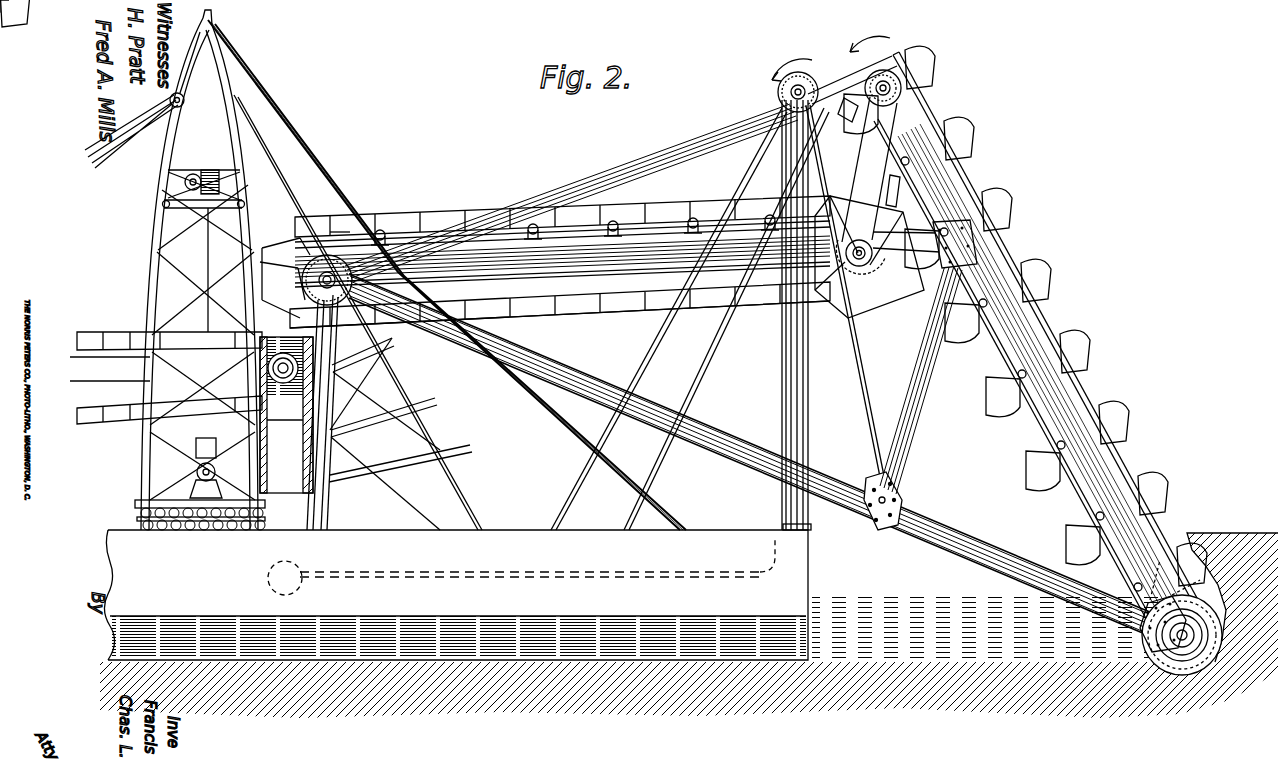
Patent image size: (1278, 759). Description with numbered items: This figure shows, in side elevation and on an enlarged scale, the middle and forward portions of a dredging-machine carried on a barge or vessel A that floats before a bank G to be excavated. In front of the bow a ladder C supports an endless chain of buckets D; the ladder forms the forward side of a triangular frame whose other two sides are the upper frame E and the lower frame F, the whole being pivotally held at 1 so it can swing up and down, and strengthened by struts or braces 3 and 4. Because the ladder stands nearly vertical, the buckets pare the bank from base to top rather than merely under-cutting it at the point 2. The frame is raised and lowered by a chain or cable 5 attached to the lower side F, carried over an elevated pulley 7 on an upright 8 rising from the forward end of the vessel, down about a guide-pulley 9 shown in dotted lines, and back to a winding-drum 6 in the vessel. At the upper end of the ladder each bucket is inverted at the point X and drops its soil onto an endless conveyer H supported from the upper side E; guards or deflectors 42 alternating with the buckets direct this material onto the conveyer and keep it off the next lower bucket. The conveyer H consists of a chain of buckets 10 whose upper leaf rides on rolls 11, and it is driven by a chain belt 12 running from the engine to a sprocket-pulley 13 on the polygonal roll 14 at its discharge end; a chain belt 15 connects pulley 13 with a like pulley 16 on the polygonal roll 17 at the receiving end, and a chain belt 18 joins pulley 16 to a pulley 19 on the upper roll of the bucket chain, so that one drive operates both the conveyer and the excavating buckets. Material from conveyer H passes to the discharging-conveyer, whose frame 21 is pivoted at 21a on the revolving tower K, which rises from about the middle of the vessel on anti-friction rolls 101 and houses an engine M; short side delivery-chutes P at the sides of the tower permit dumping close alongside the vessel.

The pivot 1 is at (292, 250).
The under-cut point 2 is at (1228, 648).
The strut or brace 3 is at (921, 378).
The strut or brace 4 is at (680, 158).
The chain or cable 5 is at (862, 368).
The winding-drum 6 is at (270, 579).
The elevated pulley 7 is at (806, 78).
The upright 8 is at (802, 315).
The guide-pulley 9 is at (770, 556).
The buckets 10 is at (655, 212).
The rolls 11 is at (395, 240).
The chain belt 12 is at (336, 382).
The sprocket-pulley 13 is at (318, 281).
The polygonal roll 14 is at (340, 232).
The chain belt 15 is at (562, 268).
The pulley 16 is at (866, 278).
The polygonal roll 17 is at (850, 262).
The chain belt 18 is at (864, 160).
The pulley 19 is at (886, 70).
The frame 21 is at (166, 378).
The pivot 21a is at (268, 368).
The guards or deflectors 42 is at (603, 294).
The anti-friction rolls 101 is at (203, 523).
The barge or vessel A is at (456, 595).
The ladder C is at (1000, 372).
The endless chain of buckets D is at (1023, 302).
The frame E is at (560, 327).
The frame F is at (735, 452).
The bank G is at (1230, 542).
The endless conveyer H is at (415, 171).
The revolving tower K is at (171, 270).
The engine M is at (196, 448).
The side delivery-chutes P is at (286, 415).
The inverted bucket point X is at (860, 63).